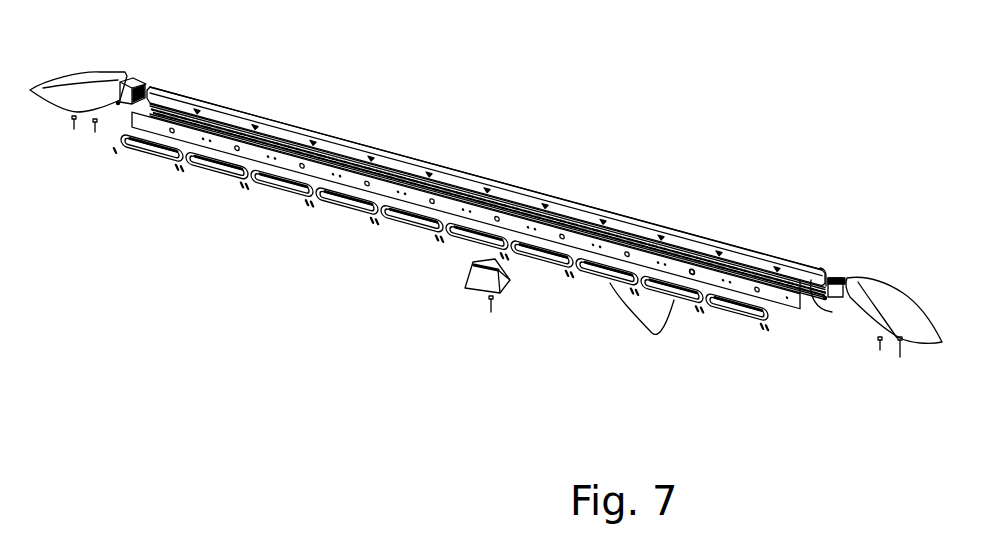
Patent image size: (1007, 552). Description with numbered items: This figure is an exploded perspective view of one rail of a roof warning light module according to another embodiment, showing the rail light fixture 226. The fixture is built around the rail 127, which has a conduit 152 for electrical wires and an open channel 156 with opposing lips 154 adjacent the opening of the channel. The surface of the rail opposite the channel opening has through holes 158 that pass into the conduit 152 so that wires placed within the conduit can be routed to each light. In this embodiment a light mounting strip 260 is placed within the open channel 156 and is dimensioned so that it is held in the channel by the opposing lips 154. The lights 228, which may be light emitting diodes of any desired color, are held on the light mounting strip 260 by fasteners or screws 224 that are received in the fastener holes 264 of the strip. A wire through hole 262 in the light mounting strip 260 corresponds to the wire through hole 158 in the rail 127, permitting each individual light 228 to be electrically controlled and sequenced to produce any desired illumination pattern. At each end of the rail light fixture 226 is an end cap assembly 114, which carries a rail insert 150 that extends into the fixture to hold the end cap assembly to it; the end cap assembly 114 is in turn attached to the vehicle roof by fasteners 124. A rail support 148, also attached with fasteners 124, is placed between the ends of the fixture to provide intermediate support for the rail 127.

The end cap assembly 114 is at (86, 72).
The fasteners 124 is at (92, 128).
The rail 127 is at (647, 222).
The rail support 148 is at (467, 278).
The rail insert 150 is at (135, 82).
The conduit 152 is at (832, 270).
The opposing lips 154 is at (820, 272).
The open channel 156 is at (837, 313).
The through holes 158 is at (582, 217).
The fasteners or screws 224 is at (303, 208).
The rail light fixture 226 is at (486, 140).
The lights 228 is at (642, 326).
The light mounting strip 260 is at (803, 290).
The wire through hole 262 is at (692, 272).
The fastener holes 264 is at (728, 283).